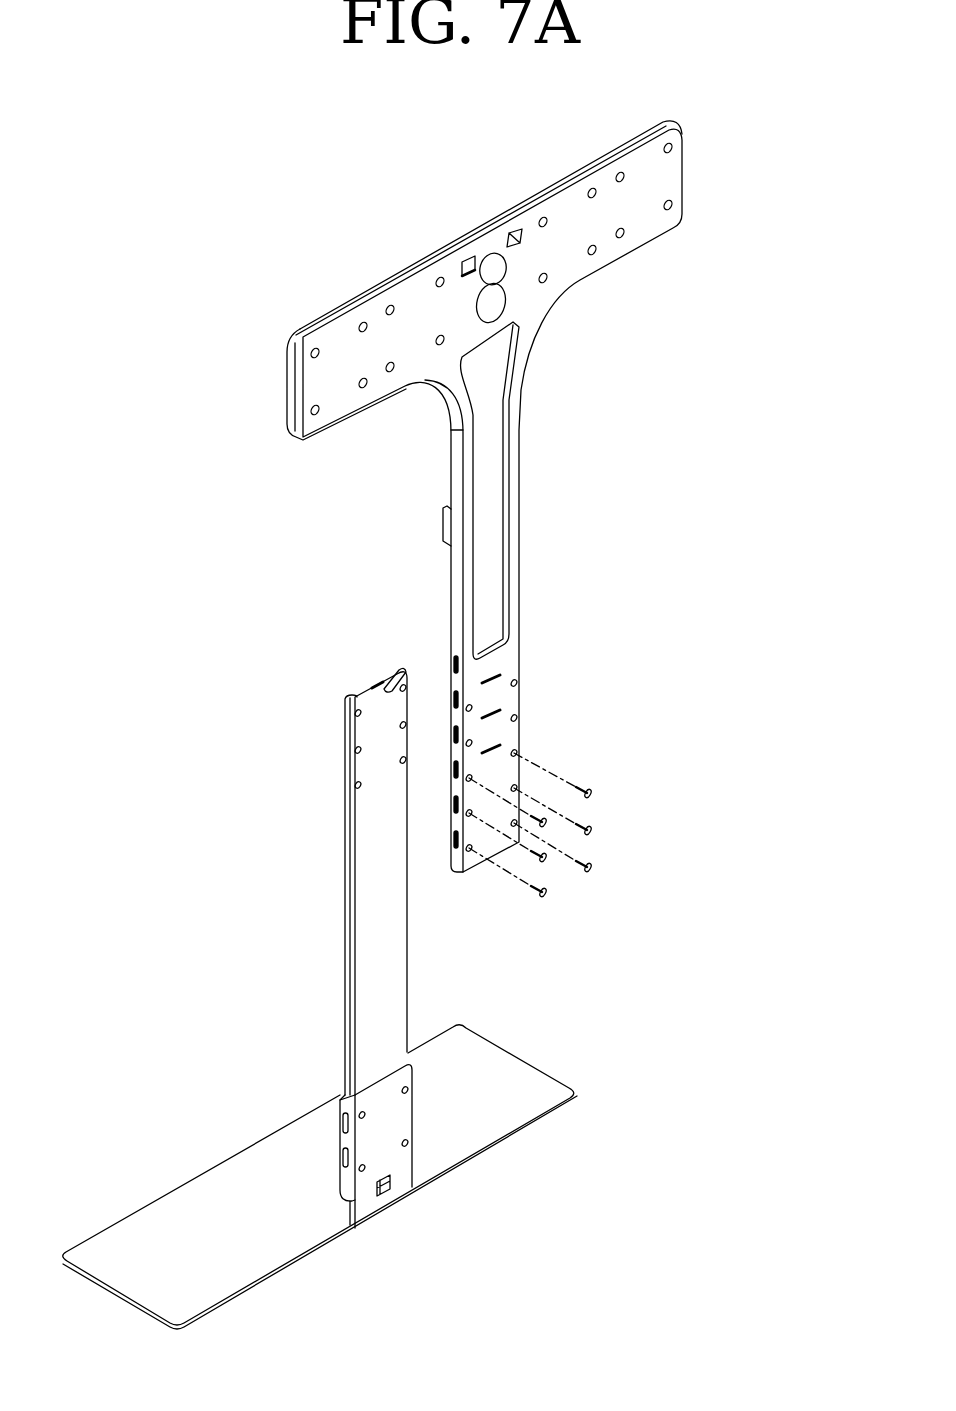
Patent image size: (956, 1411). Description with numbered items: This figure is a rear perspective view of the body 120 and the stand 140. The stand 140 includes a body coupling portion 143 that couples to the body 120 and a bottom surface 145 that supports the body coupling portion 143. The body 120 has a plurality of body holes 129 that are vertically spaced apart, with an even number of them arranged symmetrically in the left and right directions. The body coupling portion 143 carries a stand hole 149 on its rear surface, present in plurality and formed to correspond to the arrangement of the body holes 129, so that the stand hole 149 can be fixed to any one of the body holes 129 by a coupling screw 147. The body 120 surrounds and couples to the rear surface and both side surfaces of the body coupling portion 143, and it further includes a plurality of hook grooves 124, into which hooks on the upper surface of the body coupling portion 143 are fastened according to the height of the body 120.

The body 120 is at (484, 496).
The hook grooves 124 is at (503, 672).
The body holes 129 is at (519, 683).
The coupling screw 147 is at (590, 793).
The stand 140 is at (323, 998).
The body coupling portion 143 is at (394, 948).
The bottom surface 145 is at (510, 1072).
The stand hole 149 is at (357, 715).